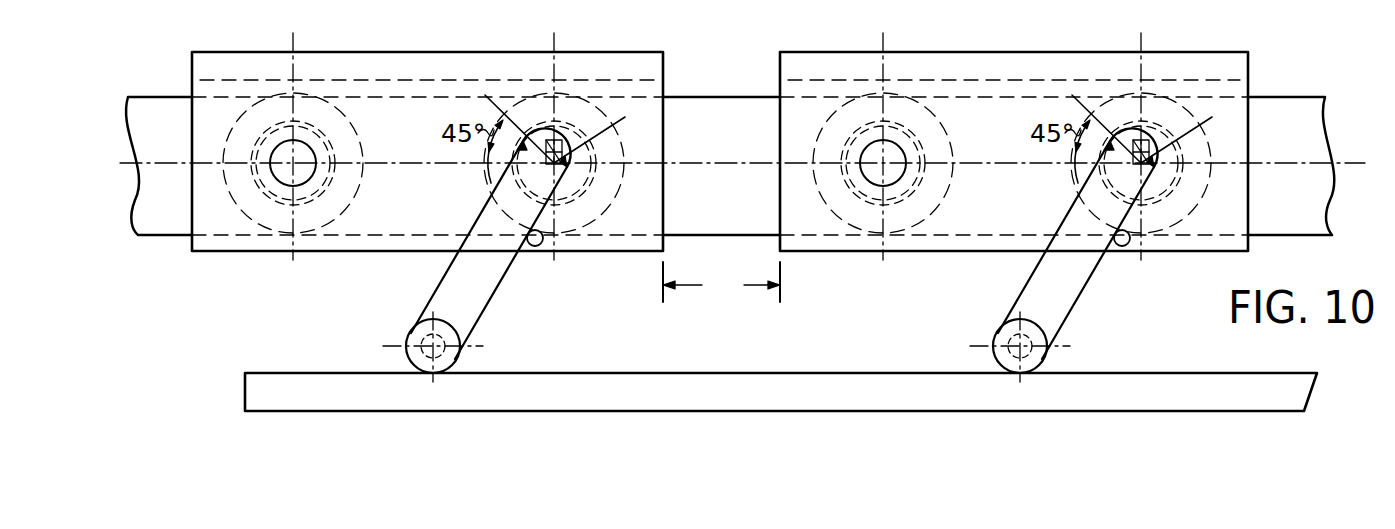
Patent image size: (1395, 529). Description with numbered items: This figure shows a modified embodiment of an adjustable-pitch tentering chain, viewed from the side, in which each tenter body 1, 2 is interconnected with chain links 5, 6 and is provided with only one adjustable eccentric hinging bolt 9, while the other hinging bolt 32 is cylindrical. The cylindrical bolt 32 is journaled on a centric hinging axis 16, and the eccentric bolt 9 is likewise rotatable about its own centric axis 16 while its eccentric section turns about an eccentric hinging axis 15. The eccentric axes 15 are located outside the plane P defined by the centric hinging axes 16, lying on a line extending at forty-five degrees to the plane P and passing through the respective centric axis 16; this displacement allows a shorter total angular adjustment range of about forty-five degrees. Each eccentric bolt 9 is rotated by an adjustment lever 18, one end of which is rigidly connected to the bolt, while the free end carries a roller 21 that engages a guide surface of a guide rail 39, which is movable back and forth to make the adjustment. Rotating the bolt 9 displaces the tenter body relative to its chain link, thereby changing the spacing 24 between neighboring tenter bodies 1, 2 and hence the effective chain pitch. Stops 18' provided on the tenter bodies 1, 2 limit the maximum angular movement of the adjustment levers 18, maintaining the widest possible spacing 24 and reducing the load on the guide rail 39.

The tenter body 1 is at (418, 67).
The tenter body 2 is at (1008, 67).
The chain link 5 is at (165, 118).
The chain link 6 is at (736, 107).
The plane P is at (1340, 160).
The adjustable eccentric hinging bolt 9 is at (577, 140).
The eccentric hinging axis 15 is at (549, 143).
The centric hinging axis 16 is at (297, 167).
The adjustment lever 18 is at (782, 250).
The stop 18' is at (850, 263).
The roller 21 is at (452, 355).
The spacing 24 is at (721, 284).
The cylindrical hinging bolt 32 is at (302, 153).
The guide rail 39 is at (1195, 398).